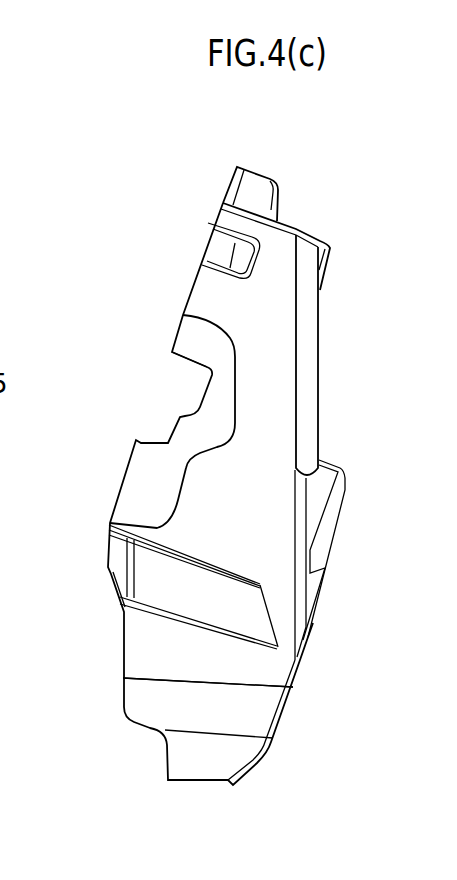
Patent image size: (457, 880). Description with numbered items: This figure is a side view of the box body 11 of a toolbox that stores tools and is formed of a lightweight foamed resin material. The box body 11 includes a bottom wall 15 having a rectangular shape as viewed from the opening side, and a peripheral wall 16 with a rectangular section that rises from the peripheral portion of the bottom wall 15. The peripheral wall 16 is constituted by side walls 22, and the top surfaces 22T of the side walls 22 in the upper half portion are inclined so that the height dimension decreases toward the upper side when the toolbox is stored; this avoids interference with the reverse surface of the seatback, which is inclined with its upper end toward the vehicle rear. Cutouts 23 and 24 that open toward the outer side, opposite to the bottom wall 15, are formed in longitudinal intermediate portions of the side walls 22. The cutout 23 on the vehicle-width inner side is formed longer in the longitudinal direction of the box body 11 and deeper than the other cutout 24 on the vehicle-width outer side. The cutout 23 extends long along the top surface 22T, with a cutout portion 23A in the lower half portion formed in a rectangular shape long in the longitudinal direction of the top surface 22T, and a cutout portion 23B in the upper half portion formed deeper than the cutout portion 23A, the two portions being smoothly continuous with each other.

The box body 11 is at (392, 183).
The bottom wall 15 is at (305, 396).
The peripheral wall 16 is at (208, 682).
The side wall 22 is at (143, 662).
The top surface of side wall 22T is at (192, 288).
The cutout 23 is at (145, 480).
The cutout portion in lower half portion 23A is at (125, 522).
The cutout portion in upper half portion 23B is at (188, 325).
The cutout 24 is at (167, 377).